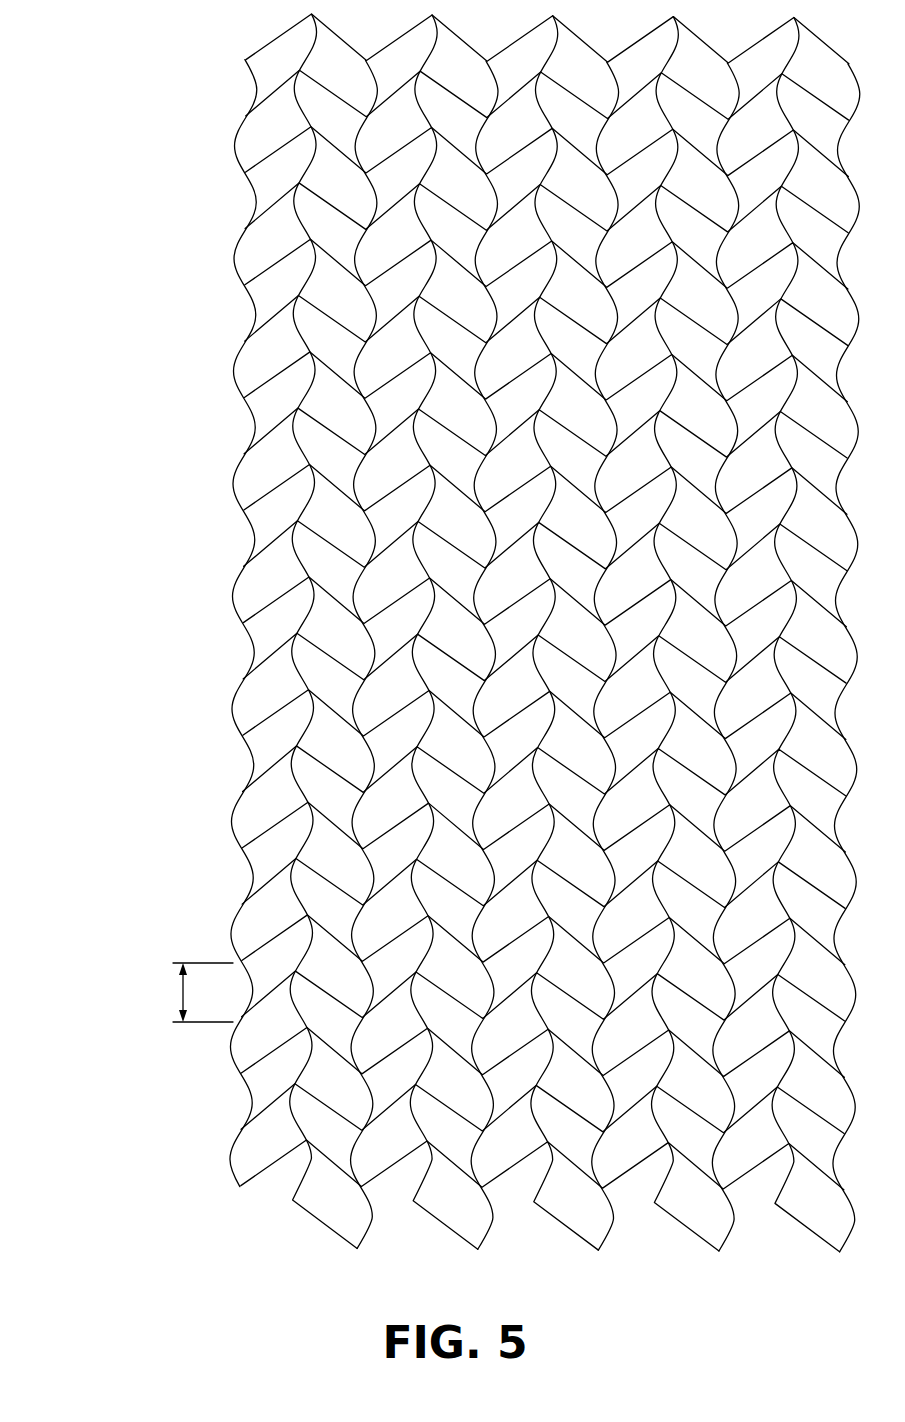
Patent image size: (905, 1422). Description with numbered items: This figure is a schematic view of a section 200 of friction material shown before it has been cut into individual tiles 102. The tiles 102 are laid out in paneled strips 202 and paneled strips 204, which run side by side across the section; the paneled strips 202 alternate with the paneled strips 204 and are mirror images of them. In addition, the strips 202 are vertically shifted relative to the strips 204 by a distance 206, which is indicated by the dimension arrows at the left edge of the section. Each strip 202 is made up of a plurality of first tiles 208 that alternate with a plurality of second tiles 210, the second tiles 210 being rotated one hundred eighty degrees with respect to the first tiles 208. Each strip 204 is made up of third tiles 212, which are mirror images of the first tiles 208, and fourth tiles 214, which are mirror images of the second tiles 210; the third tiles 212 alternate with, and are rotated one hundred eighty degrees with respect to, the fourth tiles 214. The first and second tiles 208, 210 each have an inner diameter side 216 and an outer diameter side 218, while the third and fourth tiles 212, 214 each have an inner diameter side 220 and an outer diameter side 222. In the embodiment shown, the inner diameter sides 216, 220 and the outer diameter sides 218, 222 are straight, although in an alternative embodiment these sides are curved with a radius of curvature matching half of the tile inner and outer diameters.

The section of friction material 200 is at (118, 310).
The tiles 102 is at (250, 473).
The paneled strips 202 is at (280, 1168).
The paneled strips 204 is at (325, 1226).
The distance 206 is at (182, 993).
The first tiles 208 is at (262, 632).
The second tiles 210 is at (262, 690).
The third tiles 212 is at (258, 668).
The fourth tiles 214 is at (297, 613).
The inner diameter side 216 is at (268, 657).
The outer diameter side 218 is at (285, 605).
The inner diameter side 220 is at (268, 712).
The outer diameter side 222 is at (300, 633).